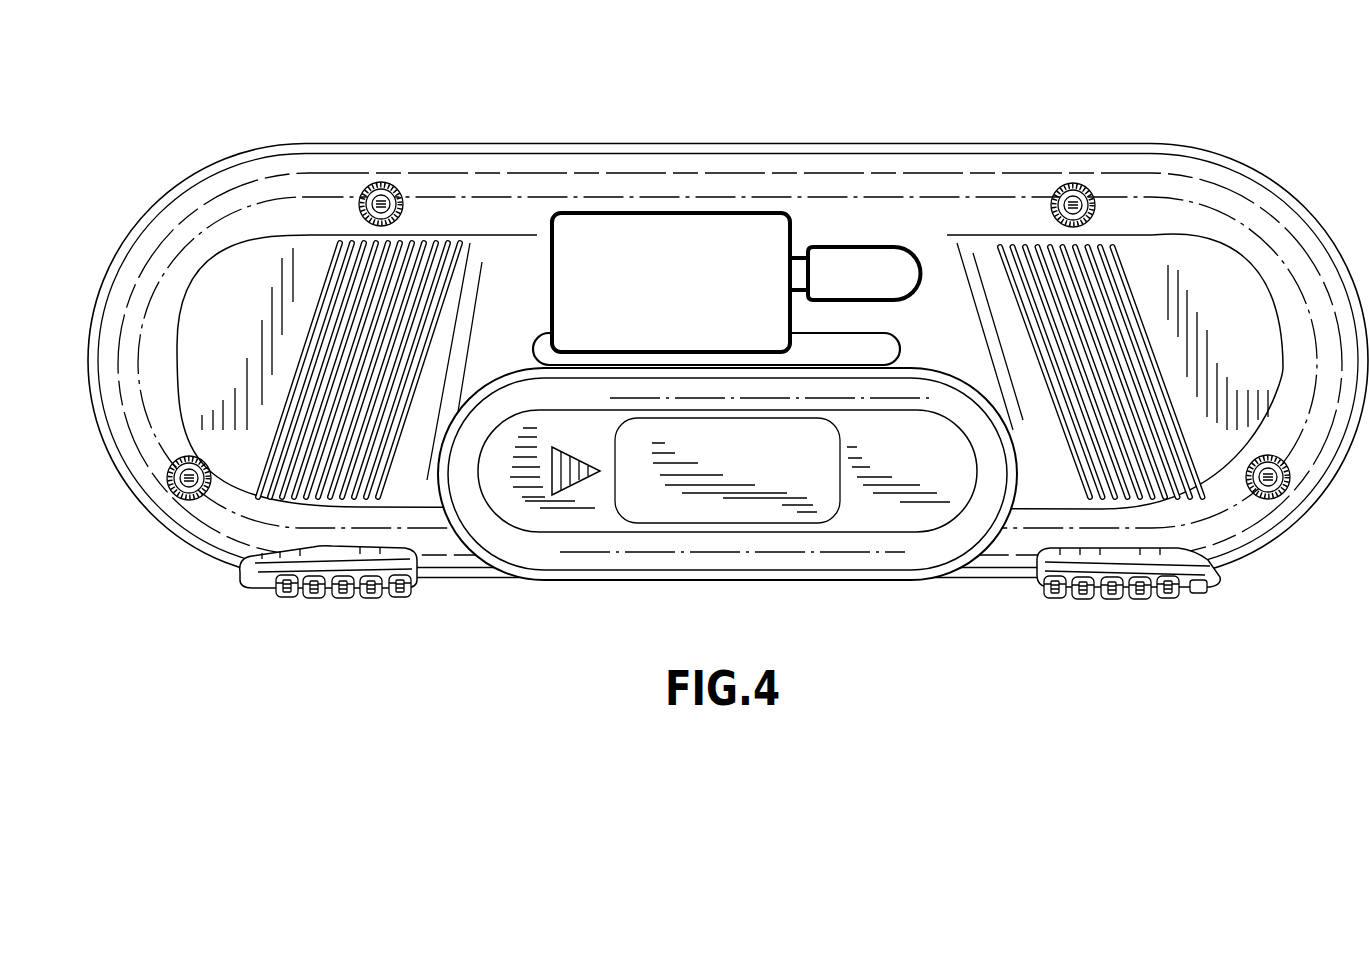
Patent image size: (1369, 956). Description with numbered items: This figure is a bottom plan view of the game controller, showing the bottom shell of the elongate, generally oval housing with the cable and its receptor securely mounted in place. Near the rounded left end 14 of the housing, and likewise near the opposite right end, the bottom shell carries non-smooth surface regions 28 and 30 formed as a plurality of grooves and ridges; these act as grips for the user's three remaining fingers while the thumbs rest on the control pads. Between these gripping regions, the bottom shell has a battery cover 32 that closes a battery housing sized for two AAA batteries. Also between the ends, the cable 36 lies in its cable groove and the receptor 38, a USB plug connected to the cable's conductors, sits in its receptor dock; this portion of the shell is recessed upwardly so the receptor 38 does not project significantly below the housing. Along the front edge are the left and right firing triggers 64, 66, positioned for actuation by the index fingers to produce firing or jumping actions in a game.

The left end 14 is at (93, 318).
The non-smooth surface region 28 is at (340, 283).
The non-smooth surface region 30 is at (1208, 475).
The battery cover 32 is at (897, 562).
The cable 36 is at (877, 257).
The receptor 38 is at (718, 220).
The left firing trigger 64 is at (283, 597).
The right firing trigger 66 is at (1172, 597).